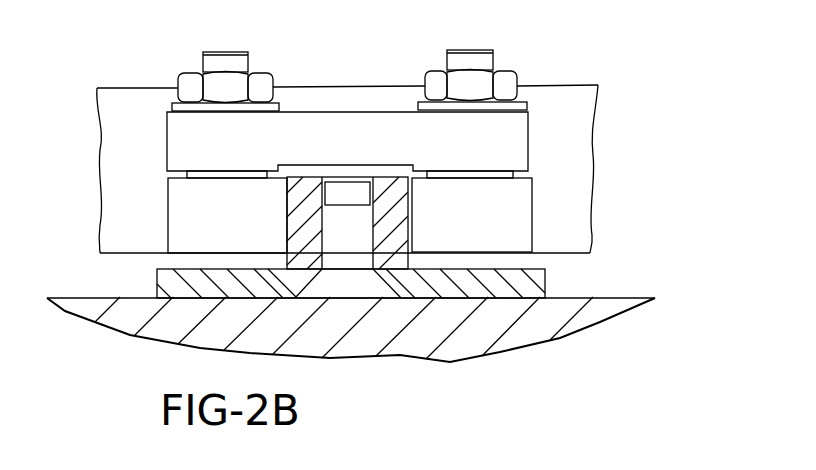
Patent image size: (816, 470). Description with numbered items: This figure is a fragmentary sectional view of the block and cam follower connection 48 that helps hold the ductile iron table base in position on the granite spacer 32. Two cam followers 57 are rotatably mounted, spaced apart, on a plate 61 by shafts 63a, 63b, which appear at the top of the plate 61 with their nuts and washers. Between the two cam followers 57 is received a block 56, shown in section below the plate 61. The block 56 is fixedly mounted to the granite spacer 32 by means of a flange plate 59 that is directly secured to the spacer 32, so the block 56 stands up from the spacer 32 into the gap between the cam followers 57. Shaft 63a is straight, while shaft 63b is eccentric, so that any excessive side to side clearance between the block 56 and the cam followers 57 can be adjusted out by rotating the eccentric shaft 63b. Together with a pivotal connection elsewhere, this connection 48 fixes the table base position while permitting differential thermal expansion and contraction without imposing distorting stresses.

The granite spacer 32 is at (600, 297).
The block and cam follower connection 48 is at (528, 153).
The block 56 is at (407, 224).
The cam followers 57 is at (167, 196).
The flange plate 59 is at (157, 282).
The plate 61 is at (337, 114).
The shaft 63a is at (283, 36).
The shaft 63b is at (528, 24).